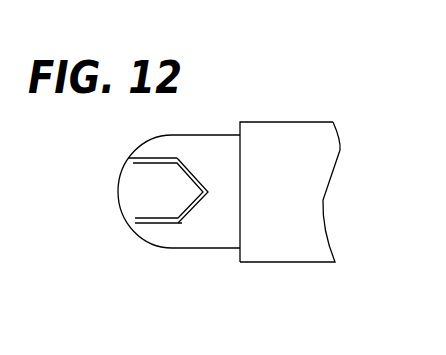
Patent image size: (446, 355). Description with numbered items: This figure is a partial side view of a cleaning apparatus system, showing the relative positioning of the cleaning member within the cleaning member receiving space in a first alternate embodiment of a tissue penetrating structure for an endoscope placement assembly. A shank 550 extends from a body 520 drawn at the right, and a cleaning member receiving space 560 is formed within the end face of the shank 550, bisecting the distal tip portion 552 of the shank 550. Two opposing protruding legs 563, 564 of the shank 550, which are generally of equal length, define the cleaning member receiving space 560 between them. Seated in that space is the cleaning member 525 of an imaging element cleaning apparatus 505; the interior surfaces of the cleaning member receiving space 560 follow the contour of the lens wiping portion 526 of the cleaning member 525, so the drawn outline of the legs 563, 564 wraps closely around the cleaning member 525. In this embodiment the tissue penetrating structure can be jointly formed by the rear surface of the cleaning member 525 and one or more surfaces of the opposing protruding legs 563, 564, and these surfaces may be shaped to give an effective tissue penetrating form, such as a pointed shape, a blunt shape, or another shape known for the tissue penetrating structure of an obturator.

The imaging element cleaning apparatus 505 is at (258, 121).
The housing 520 is at (297, 262).
The shank 550 is at (208, 145).
The distal tip portion 552 is at (185, 235).
The cleaning member receiving space 560 is at (123, 171).
The protruding leg 564 is at (155, 143).
The protruding leg 563 is at (147, 232).
The cleaning member 525 is at (130, 201).
The lens wiping portion 526 is at (192, 193).